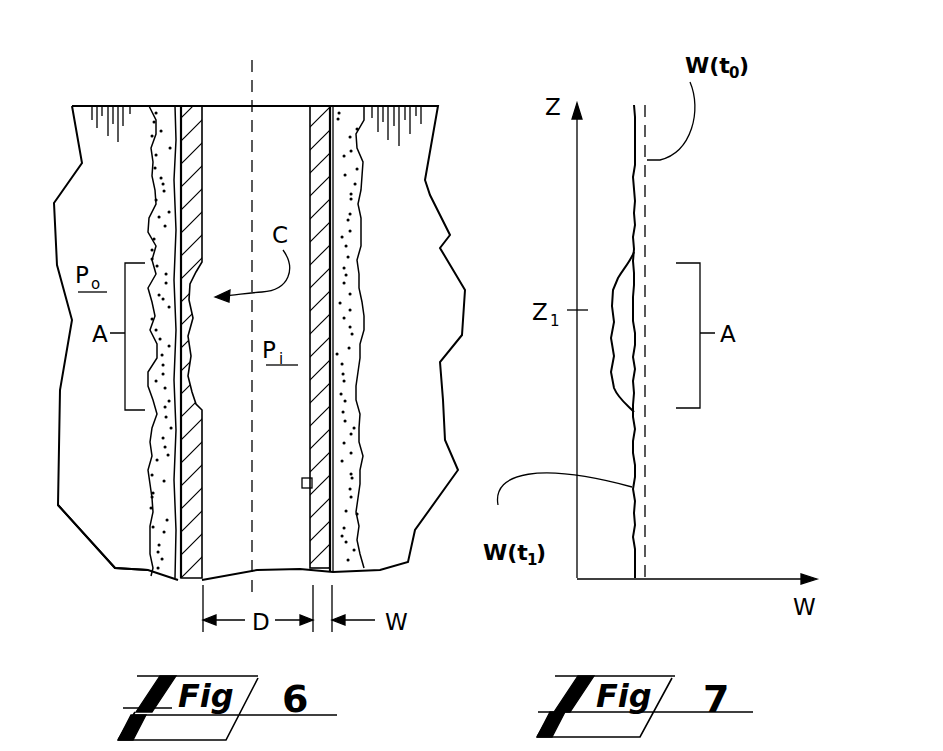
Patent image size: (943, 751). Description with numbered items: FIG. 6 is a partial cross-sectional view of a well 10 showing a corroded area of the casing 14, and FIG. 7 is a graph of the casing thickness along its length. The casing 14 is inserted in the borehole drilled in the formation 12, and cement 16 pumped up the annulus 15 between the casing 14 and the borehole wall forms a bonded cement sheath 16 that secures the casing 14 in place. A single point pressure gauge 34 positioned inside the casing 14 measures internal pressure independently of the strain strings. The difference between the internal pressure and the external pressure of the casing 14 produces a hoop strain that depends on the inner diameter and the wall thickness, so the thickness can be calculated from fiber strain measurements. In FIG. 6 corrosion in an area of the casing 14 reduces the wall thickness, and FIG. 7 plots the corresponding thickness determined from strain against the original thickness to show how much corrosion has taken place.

The well 10 is at (295, 75).
The formation 12 is at (125, 502).
The casing 14 is at (218, 106).
The annulus 15 is at (147, 147).
The cement sheath 16 is at (218, 314).
The pressure gauge 34 is at (302, 483).